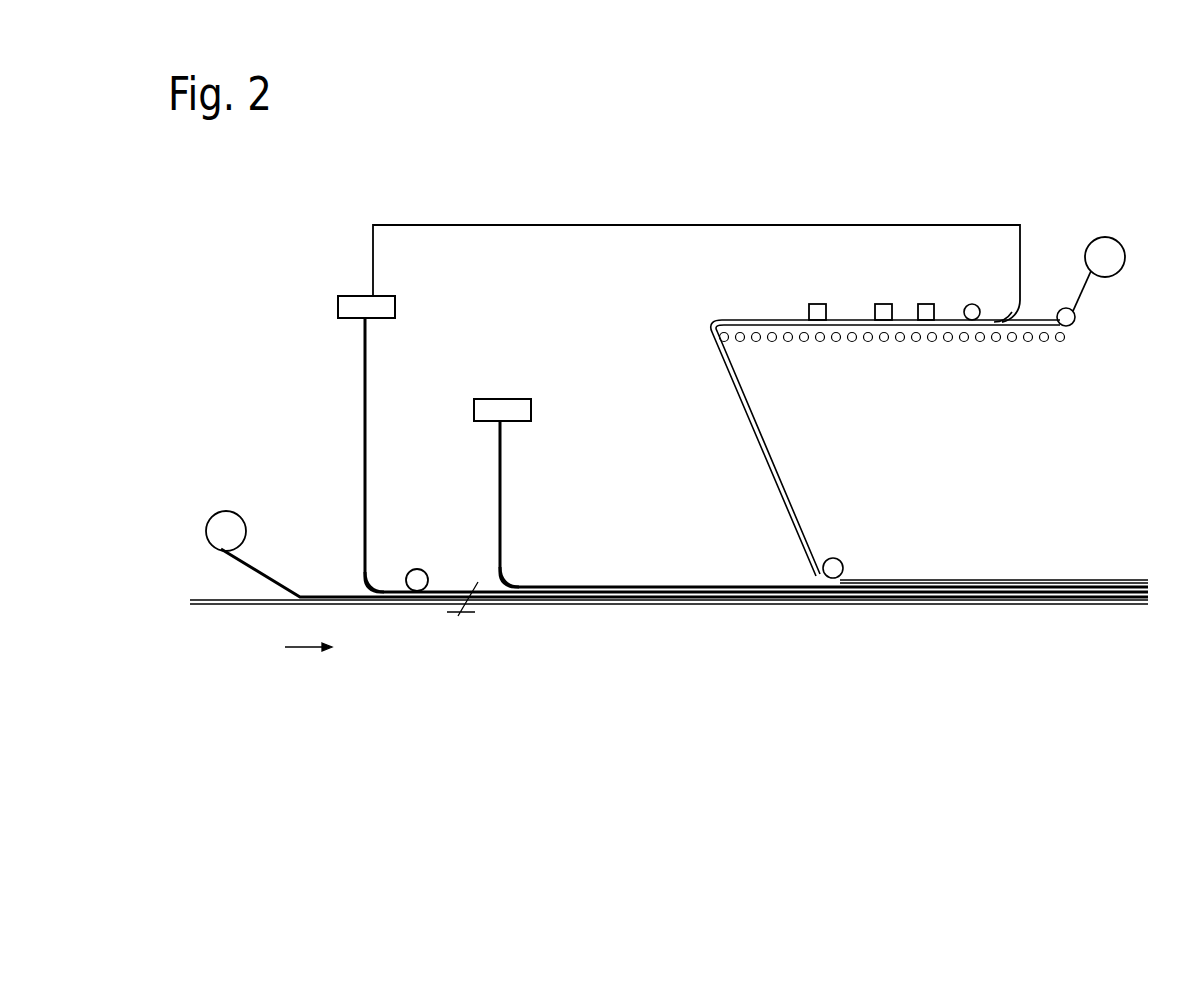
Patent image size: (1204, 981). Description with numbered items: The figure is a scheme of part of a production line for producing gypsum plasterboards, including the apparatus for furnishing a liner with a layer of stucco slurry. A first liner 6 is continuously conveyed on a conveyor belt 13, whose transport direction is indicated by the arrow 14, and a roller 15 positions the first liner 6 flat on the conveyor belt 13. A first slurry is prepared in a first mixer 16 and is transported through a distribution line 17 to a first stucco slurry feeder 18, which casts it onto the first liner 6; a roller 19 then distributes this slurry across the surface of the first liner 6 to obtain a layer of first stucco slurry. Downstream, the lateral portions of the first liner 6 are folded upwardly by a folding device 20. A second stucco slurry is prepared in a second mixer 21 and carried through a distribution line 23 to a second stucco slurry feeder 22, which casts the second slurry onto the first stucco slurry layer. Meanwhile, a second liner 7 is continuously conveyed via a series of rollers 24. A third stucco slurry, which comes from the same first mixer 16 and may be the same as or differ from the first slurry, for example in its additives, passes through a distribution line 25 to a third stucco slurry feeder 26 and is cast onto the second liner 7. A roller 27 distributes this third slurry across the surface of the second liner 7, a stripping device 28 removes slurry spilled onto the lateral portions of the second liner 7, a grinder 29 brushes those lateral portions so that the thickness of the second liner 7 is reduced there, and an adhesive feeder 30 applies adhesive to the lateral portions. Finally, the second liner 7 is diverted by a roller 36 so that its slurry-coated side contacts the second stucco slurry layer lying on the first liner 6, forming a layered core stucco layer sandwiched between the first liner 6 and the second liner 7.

The first liner 6 is at (257, 570).
The second liner 7 is at (1110, 298).
The conveyor belt 13 is at (237, 606).
The arrow 14 is at (308, 658).
The roller 15 is at (305, 593).
The first mixer 16 is at (352, 303).
The distribution line 17 is at (367, 405).
The first stucco slurry feeder 18 is at (372, 585).
The roller 19 is at (421, 576).
The folding device 20 is at (470, 612).
The second mixer 21 is at (506, 407).
The second stucco slurry feeder 22 is at (508, 583).
The distribution line 23 is at (497, 512).
The series of rollers 24 is at (710, 336).
The distribution line 25 is at (488, 221).
The third stucco slurry feeder 26 is at (1008, 316).
The roller 27 is at (968, 330).
The stripping device 28 is at (920, 330).
The grinder 29 is at (880, 330).
The adhesive feeder 30 is at (814, 330).
The roller 36 is at (843, 568).